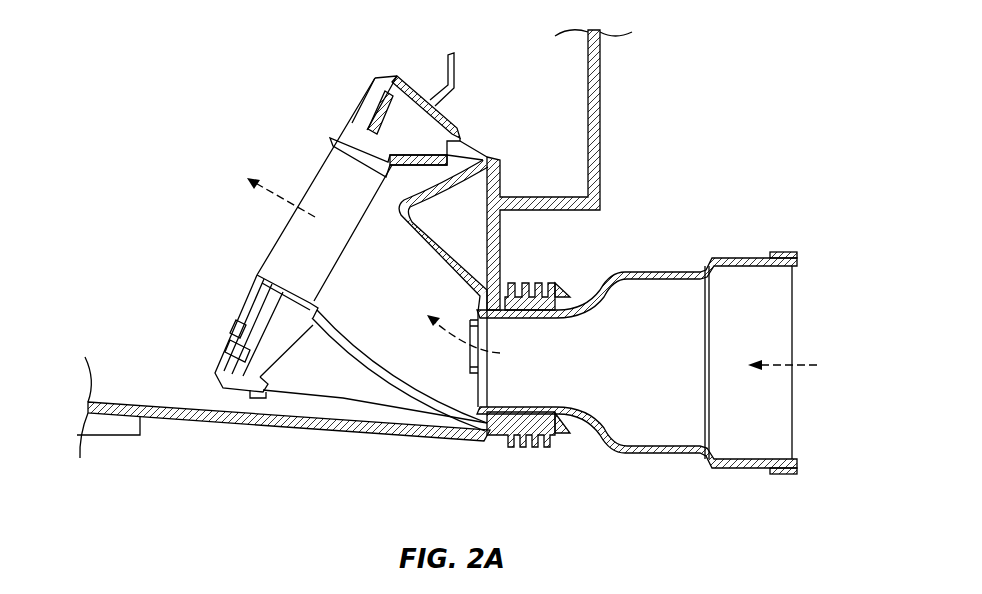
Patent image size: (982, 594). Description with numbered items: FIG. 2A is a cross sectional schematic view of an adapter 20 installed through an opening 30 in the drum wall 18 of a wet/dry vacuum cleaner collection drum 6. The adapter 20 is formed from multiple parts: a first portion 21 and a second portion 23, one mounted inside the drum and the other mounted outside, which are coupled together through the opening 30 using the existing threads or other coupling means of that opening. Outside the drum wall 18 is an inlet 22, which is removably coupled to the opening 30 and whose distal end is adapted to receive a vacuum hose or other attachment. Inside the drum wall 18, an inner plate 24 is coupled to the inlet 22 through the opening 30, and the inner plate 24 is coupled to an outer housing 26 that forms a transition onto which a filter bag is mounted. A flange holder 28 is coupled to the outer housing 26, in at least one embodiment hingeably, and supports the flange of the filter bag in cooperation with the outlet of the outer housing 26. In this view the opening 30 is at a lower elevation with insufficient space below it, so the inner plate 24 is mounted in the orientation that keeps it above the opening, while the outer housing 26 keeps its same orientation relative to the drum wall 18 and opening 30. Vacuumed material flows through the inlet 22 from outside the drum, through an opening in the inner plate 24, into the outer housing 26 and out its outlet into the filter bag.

The adapter 20 is at (745, 47).
The first portion 21 is at (345, 90).
The flange holder 28 is at (374, 80).
The outer housing 26 is at (332, 145).
The inner plate 24 is at (413, 238).
The drum wall 18 is at (597, 127).
The collection drum 6 is at (601, 57).
The second portion 23 is at (666, 207).
The inlet 22 is at (682, 270).
The opening 30 is at (524, 300).